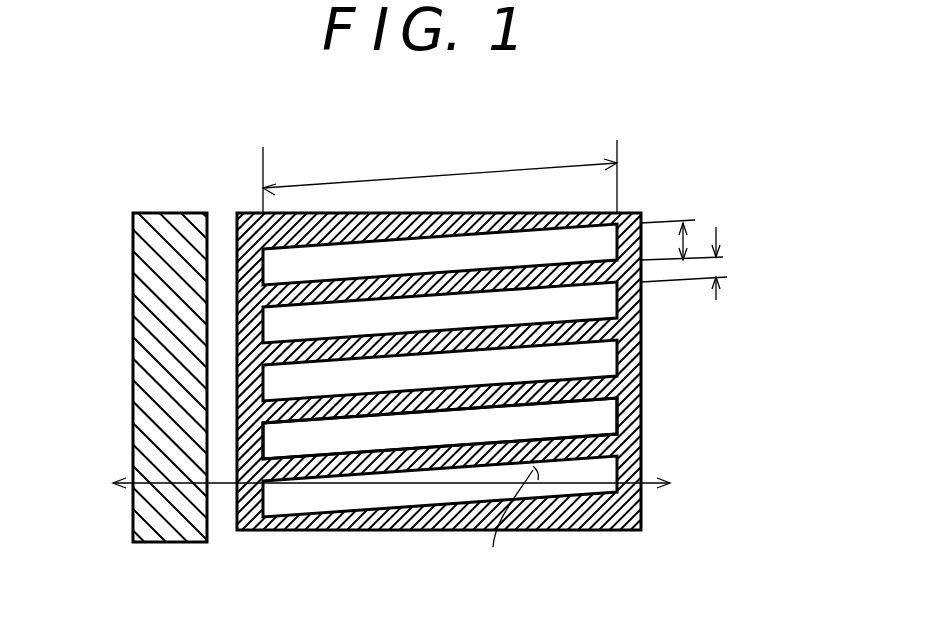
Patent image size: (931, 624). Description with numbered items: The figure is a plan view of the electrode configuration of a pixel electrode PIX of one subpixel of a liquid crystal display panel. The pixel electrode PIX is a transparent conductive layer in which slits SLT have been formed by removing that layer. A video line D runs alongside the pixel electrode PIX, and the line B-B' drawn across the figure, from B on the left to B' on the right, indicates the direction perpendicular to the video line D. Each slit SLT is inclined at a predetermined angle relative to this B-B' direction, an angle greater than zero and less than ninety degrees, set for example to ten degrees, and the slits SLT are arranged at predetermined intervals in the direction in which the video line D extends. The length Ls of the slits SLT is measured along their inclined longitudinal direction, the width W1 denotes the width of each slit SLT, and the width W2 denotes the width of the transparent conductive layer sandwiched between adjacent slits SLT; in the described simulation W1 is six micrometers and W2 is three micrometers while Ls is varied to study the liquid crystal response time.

The video line D is at (165, 230).
The pixel electrode PIX is at (633, 342).
The slit SLT is at (595, 420).
The slit length Ls is at (440, 176).
The slit width W1 is at (688, 242).
The width of transparent conductive layer between slits W2 is at (720, 265).
The B end of section line B-B' B is at (376, 482).
The B' end of section line B- B' is at (682, 482).